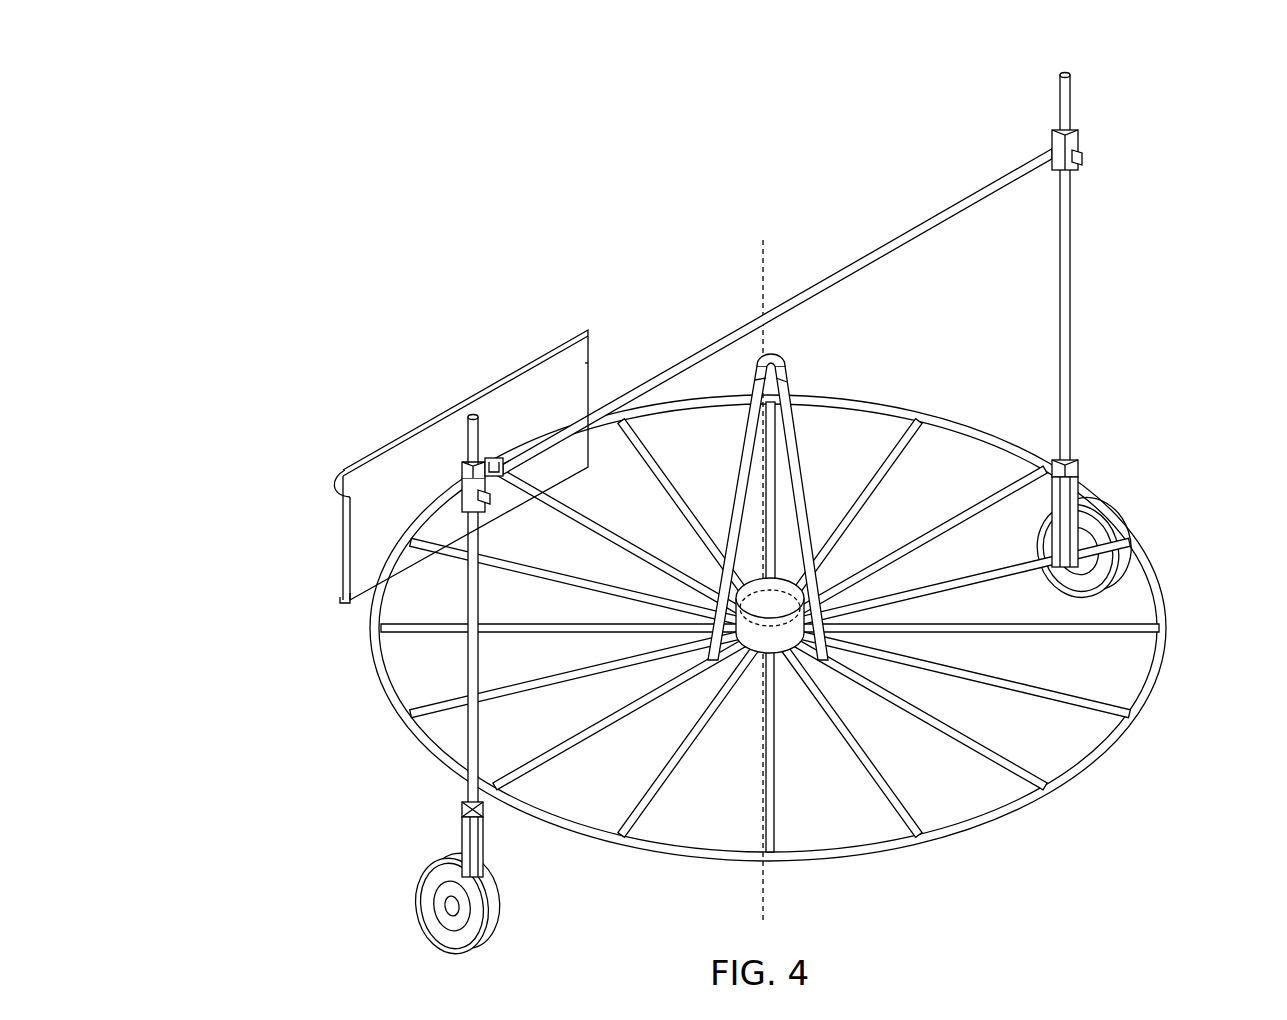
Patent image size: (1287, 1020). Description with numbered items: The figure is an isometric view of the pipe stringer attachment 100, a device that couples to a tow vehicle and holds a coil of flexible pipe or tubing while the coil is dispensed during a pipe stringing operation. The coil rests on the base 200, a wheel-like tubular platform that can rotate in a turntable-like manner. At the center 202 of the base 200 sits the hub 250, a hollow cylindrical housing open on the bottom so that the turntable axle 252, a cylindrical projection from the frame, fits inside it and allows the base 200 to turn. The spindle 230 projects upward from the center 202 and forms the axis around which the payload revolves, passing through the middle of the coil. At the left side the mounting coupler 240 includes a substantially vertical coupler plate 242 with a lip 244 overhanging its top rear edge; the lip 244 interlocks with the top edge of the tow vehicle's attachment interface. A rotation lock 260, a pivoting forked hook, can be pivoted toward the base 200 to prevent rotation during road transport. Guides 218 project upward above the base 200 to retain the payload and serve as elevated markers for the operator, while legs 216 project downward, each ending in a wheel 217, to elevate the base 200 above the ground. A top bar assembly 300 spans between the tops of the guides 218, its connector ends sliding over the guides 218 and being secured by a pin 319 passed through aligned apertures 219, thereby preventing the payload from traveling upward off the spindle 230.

The pipe stringer attachment 100 is at (340, 231).
The base 200 is at (1140, 627).
The center 202 is at (770, 259).
The legs 216 is at (467, 833).
The wheel 217 is at (433, 895).
The guides 218 is at (475, 672).
The apertures 219 is at (487, 512).
The spindle 230 is at (783, 369).
The mounting coupler 240 is at (300, 483).
The coupler plate 242 is at (503, 403).
The lip 244 is at (338, 478).
The hub 250 is at (763, 575).
The turntable axle 252 is at (728, 560).
The rotation lock 260 is at (500, 457).
The top bar assembly 300 is at (921, 226).
The pin 319 is at (1080, 160).